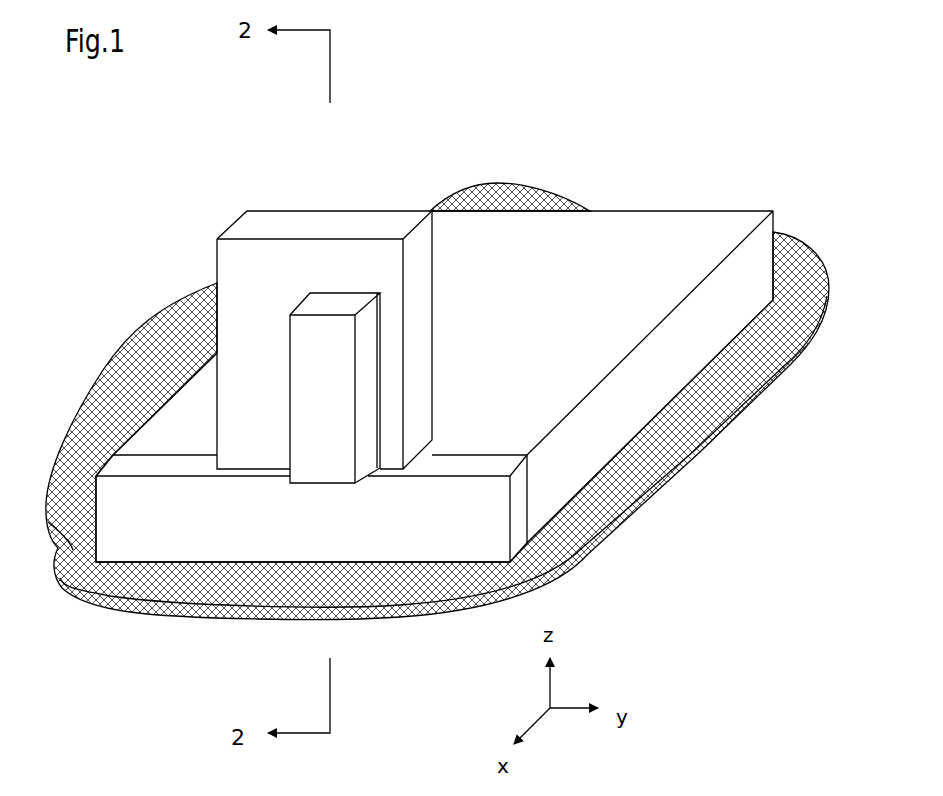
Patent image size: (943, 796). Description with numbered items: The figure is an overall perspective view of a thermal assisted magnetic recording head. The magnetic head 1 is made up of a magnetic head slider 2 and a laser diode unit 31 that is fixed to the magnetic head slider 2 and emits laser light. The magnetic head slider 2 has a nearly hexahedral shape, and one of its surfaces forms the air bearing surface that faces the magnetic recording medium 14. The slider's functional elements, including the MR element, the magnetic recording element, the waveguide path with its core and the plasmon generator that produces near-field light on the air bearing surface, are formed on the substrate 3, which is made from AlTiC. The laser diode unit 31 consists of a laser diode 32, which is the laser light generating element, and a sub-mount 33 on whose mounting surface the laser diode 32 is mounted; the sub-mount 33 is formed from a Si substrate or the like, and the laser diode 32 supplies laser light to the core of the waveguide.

The magnetic head 1 is at (386, 165).
The magnetic head slider 2 is at (645, 203).
The substrate 3 is at (714, 349).
The magnetic recording medium 14 is at (85, 423).
The laser diode unit 31 is at (288, 193).
The laser diode 32 is at (298, 329).
The sub-mount 33 is at (331, 218).